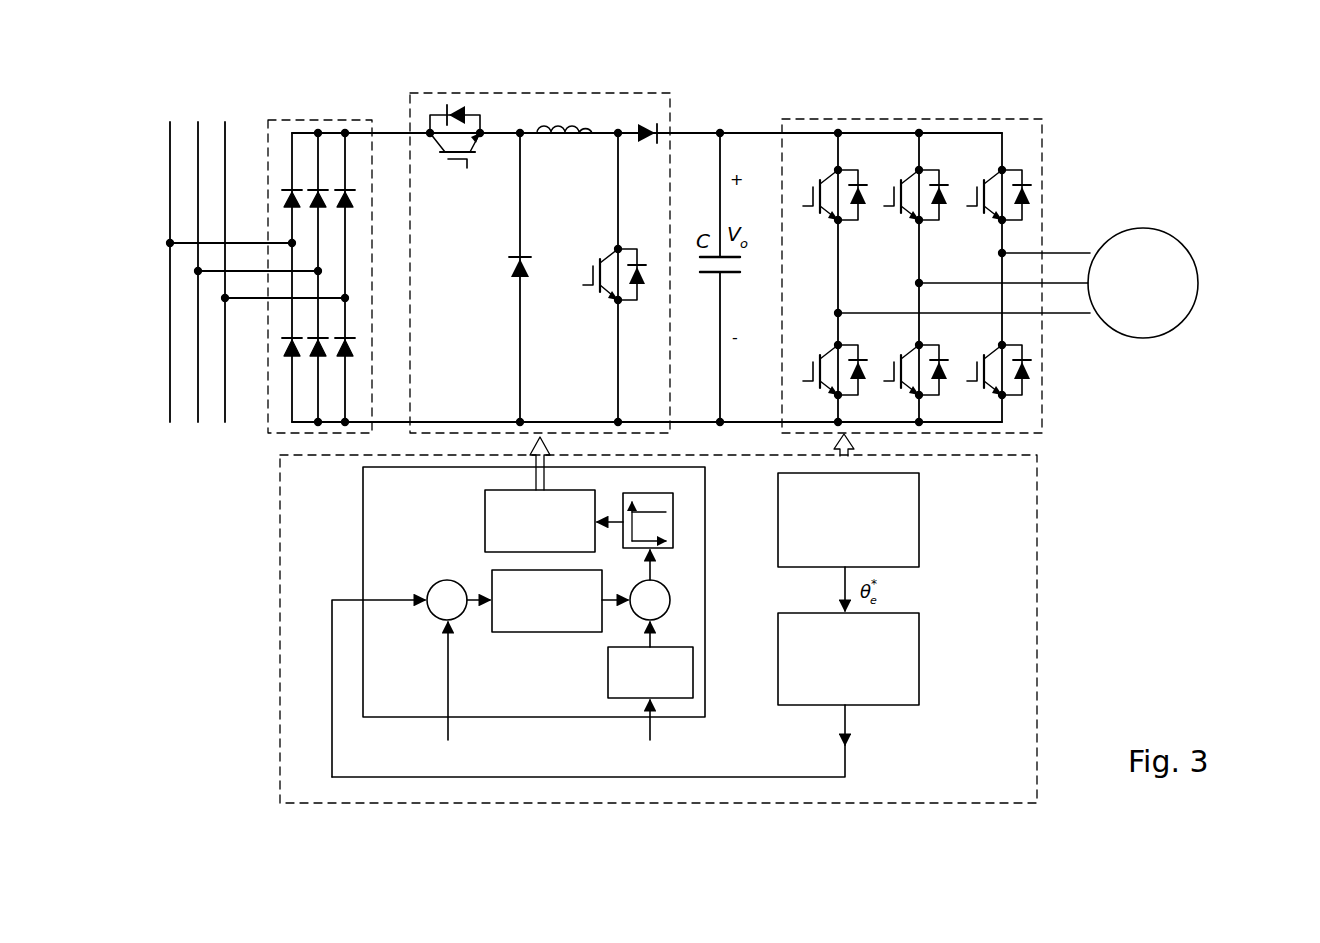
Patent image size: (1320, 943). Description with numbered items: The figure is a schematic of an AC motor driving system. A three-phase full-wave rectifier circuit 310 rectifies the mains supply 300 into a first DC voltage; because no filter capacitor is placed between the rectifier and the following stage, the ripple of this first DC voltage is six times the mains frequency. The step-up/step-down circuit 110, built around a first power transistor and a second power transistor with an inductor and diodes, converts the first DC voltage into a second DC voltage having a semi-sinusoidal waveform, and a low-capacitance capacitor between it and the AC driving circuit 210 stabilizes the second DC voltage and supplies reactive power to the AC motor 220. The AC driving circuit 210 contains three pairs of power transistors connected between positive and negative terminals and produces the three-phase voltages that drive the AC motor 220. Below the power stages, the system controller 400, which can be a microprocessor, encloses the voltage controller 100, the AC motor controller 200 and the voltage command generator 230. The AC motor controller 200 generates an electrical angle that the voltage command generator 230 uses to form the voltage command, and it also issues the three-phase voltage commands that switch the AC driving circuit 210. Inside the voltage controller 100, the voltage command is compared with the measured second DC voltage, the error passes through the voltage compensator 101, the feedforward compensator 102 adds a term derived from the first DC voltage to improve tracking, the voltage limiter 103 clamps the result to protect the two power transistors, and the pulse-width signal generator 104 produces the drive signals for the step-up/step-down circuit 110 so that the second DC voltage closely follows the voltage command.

The mains supply 300 is at (163, 92).
The three-phase full-wave rectifier circuit 310 is at (292, 119).
The step-up/step-down circuit 110 is at (432, 93).
The AC driving circuit 210 is at (805, 119).
The AC motor 220 is at (1196, 281).
The voltage controller 100 is at (492, 616).
The voltage compensator 101 is at (536, 634).
The feedforward compensator 102 is at (693, 670).
The voltage limiter 103 is at (673, 524).
The pulse-width signal generator 104 is at (497, 521).
The AC motor controller 200 is at (907, 525).
The voltage command generator 230 is at (910, 657).
The system controller 400 is at (1037, 718).